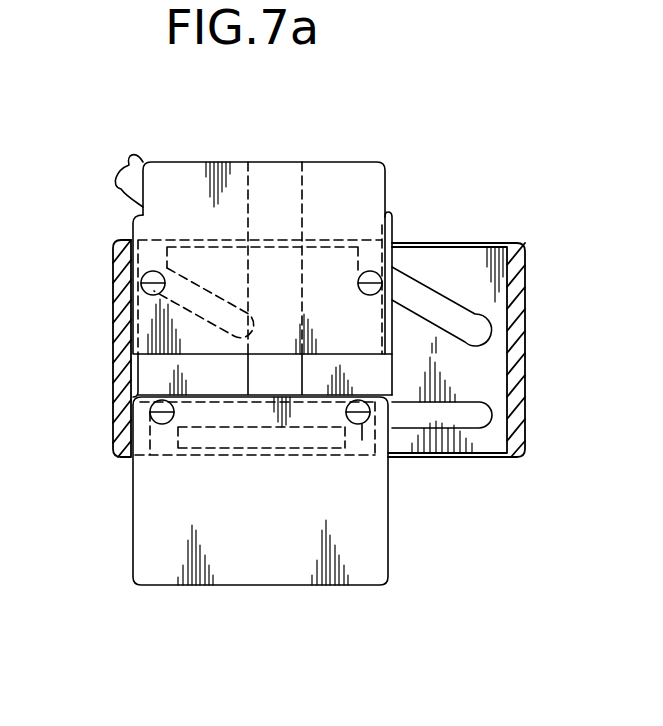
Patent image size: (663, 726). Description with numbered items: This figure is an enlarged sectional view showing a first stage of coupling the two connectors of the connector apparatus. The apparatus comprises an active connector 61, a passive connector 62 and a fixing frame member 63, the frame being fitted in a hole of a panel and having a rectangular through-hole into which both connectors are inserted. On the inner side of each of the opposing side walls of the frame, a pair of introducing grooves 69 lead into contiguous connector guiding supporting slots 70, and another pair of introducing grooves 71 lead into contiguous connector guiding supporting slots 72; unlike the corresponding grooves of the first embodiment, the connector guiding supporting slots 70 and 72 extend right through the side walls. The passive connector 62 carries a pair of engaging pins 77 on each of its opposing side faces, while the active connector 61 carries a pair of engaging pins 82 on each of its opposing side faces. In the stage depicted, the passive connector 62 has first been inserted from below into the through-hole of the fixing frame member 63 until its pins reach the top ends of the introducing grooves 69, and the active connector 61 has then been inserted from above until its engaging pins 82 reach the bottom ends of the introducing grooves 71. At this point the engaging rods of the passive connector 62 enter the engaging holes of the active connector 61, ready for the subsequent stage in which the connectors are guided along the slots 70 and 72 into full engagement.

The active connector 61 is at (372, 184).
The passive connector 62 is at (370, 565).
The fixing frame member 63 is at (131, 368).
The introducing grooves 69 is at (160, 445).
The connector guiding supporting slots 70 is at (220, 427).
The introducing grooves 71 is at (113, 250).
The connector guiding supporting slots 72 is at (207, 290).
The engaging pins 77 is at (362, 440).
The engaging pins 82 is at (370, 270).